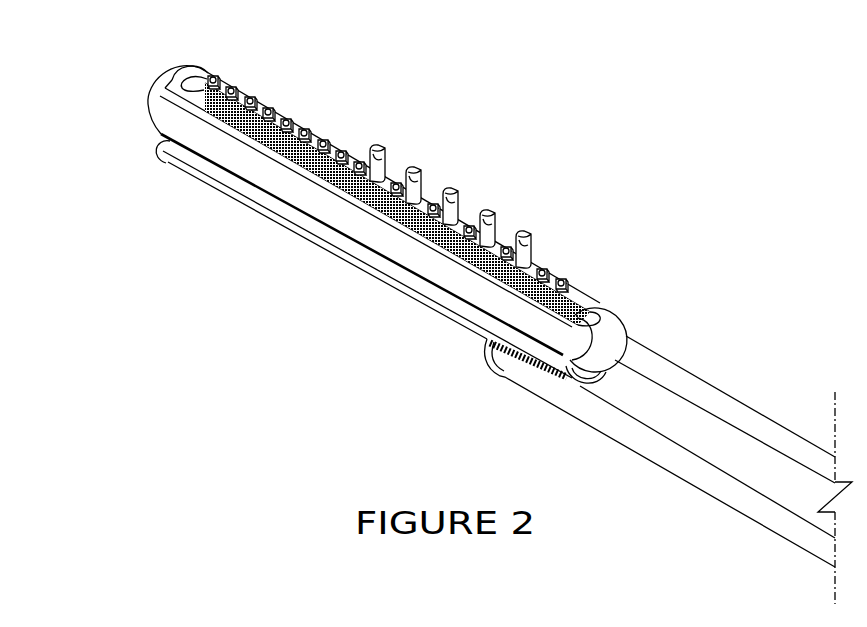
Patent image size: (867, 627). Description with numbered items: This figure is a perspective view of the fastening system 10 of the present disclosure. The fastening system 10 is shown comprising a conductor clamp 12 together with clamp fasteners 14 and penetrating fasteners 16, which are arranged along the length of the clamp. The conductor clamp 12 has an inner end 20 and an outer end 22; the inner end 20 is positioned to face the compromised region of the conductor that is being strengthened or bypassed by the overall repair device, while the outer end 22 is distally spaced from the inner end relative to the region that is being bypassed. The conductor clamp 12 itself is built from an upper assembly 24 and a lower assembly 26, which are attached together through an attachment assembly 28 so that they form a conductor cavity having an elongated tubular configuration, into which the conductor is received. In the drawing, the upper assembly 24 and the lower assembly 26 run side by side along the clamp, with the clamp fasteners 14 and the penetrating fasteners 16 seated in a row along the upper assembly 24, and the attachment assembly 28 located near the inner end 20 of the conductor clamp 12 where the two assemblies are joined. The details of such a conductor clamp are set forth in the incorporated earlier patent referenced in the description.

The fastening system 10 is at (278, 274).
The conductor clamp 12 is at (378, 262).
The clamp fasteners 14 is at (263, 98).
The penetrating fasteners 16 is at (382, 147).
The inner end 20 is at (629, 312).
The outer end 22 is at (119, 61).
The upper assembly 24 is at (230, 82).
The lower assembly 26 is at (422, 298).
The attachment assembly 28 is at (567, 374).